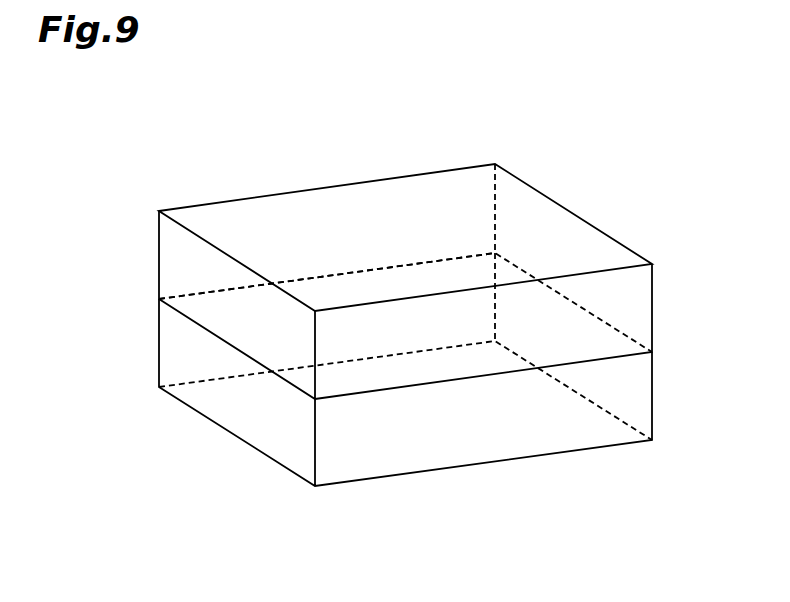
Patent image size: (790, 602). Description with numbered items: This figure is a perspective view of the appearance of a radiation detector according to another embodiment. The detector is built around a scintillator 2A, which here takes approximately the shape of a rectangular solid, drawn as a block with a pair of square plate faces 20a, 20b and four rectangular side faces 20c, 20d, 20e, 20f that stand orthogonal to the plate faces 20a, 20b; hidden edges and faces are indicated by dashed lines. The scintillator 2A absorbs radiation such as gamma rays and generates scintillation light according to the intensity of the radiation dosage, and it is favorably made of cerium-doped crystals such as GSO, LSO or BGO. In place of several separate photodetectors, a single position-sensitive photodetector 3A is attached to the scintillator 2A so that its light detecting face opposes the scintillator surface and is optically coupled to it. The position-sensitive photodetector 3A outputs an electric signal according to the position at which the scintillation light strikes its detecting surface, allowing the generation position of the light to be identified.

The scintillator 2A is at (410, 263).
The position-sensitive photodetector 3A is at (188, 357).
The plate face 20a is at (422, 193).
The plate face 20b is at (627, 343).
The side face 20c is at (627, 299).
The side face 20d is at (188, 272).
The side face 20e is at (367, 222).
The side face 20f is at (610, 297).